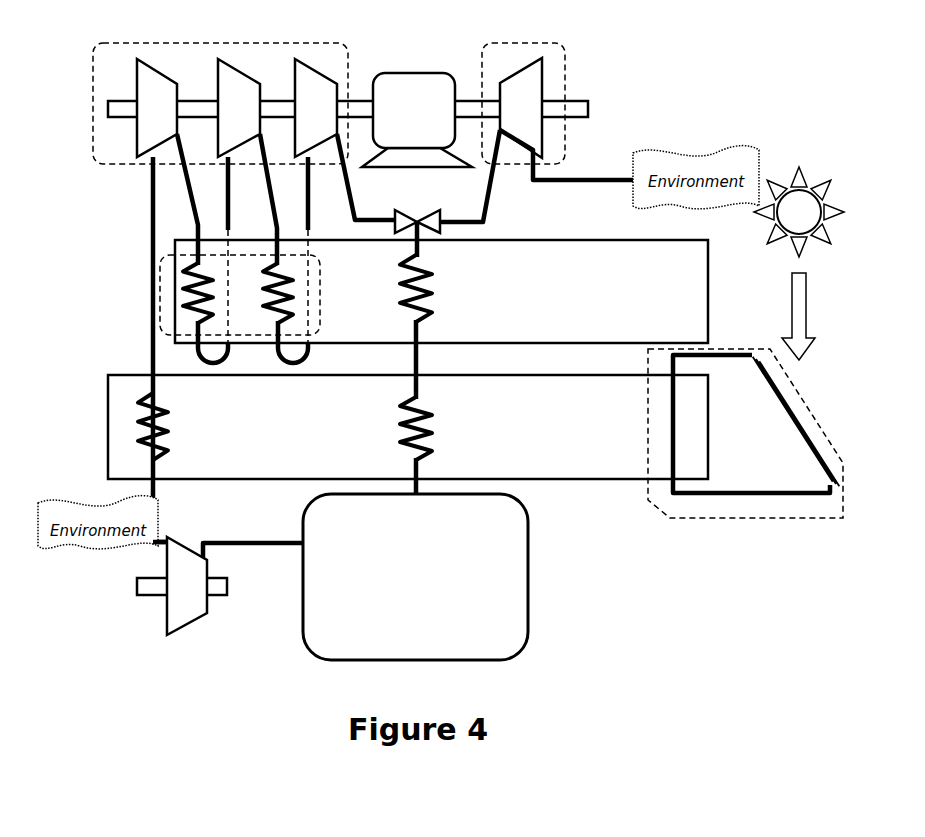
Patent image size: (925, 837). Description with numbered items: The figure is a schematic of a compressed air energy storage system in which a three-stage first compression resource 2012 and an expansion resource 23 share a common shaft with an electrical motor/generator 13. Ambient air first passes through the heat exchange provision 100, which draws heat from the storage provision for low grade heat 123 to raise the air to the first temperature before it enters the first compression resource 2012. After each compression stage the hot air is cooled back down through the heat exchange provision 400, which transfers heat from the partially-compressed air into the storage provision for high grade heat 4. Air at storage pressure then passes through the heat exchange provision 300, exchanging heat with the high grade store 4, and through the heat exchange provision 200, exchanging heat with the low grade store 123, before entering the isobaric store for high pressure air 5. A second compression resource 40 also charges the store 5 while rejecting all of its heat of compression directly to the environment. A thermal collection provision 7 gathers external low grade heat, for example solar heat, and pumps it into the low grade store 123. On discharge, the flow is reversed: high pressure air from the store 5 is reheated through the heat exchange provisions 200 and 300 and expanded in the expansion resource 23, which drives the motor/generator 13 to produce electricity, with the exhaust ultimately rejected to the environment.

The first compression resource 2012 is at (352, 60).
The electrical motor/generator 13 is at (422, 73).
The expansion resource 23 is at (567, 58).
The heat exchange provision 300 is at (438, 295).
The storage provision for high grade heat 4 is at (604, 240).
The heat exchange provision 400 is at (162, 293).
The heat exchange provision 100 is at (122, 427).
The heat exchange provision 200 is at (432, 458).
The storage provision for low grade heat 123 is at (613, 482).
The thermal collection provision 7 is at (738, 518).
The second compression resource 40 is at (180, 543).
The store for high pressure air 5 is at (305, 645).